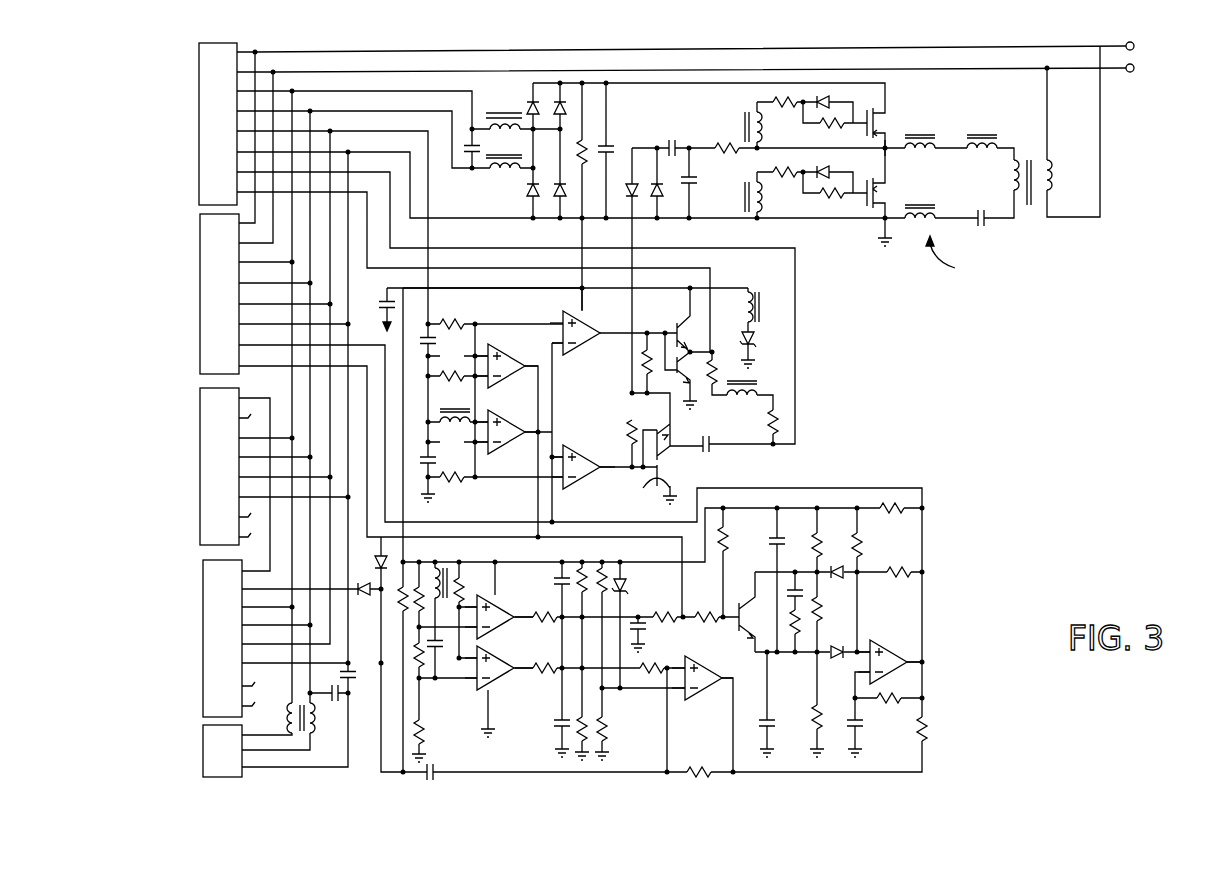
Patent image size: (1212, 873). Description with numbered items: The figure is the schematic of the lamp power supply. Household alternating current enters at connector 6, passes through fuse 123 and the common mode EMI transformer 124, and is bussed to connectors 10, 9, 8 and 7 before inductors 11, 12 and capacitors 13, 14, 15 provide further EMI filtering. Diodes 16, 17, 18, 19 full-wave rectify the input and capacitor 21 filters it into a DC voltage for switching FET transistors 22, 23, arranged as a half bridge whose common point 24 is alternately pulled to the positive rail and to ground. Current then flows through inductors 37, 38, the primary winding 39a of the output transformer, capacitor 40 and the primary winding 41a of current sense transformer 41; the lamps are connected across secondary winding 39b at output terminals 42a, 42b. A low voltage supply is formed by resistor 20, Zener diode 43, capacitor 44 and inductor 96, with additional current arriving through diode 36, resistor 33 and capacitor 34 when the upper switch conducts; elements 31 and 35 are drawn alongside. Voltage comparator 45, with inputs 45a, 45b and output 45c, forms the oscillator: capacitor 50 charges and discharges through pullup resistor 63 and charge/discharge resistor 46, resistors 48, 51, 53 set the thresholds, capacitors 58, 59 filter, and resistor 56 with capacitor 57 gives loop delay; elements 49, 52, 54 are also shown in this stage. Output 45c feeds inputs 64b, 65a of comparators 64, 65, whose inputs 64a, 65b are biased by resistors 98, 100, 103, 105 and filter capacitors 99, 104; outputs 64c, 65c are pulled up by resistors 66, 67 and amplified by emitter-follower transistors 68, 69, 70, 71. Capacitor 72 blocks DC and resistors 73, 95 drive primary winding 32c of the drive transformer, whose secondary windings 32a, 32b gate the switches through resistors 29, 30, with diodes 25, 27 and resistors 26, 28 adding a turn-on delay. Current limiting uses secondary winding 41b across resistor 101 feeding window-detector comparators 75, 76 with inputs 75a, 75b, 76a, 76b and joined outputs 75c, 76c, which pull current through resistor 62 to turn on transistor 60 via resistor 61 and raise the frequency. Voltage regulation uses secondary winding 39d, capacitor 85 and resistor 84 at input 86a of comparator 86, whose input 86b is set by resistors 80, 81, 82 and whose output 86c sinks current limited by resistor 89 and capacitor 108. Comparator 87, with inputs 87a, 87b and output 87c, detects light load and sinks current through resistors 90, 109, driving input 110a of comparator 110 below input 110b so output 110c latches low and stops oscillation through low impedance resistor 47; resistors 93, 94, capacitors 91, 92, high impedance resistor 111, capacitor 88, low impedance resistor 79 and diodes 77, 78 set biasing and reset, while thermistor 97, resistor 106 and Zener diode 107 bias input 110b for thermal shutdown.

The connector 10 is at (199, 62).
The connector 9 is at (200, 255).
The connector 8 is at (200, 436).
The connector 7 is at (203, 623).
The connector 6 is at (203, 748).
The inductor 11 is at (495, 112).
The inductor 12 is at (497, 176).
The capacitor 13 is at (468, 145).
The capacitor 14 is at (336, 702).
The capacitor 15 is at (351, 680).
The diode 16 is at (529, 104).
The diode 17 is at (560, 82).
The diode 18 is at (528, 200).
The diode 19 is at (558, 218).
The resistor 20 is at (580, 145).
The capacitor 21 is at (608, 145).
The switching FET transistor 22 is at (885, 112).
The switching FET transistor 23 is at (880, 190).
The common point 24 is at (888, 152).
The diode 25 is at (833, 97).
The resistor 26 is at (830, 128).
The diode 27 is at (835, 166).
The resistor 28 is at (840, 198).
The resistor 29 is at (783, 116).
The resistor 30 is at (784, 177).
The diode 31 is at (659, 184).
The secondary winding 32a is at (755, 106).
The secondary winding 32b is at (752, 196).
The primary winding 32c is at (748, 399).
The resistor 33 is at (728, 153).
The capacitor 34 is at (673, 139).
The capacitor 35 is at (688, 188).
The diode 36 is at (636, 184).
The inductor 37 is at (935, 142).
The inductor 38 is at (999, 148).
The primary winding 39a is at (1010, 180).
The secondary winding 39b is at (1053, 190).
The secondary winding 39d is at (436, 570).
The capacitor 40 is at (985, 226).
The current sense transformer 41 is at (947, 258).
The primary winding 41a is at (930, 215).
The secondary winding 41b is at (450, 409).
The output terminal 42a is at (1135, 46).
The output terminal 42b is at (1135, 68).
The Zener diode 43 is at (756, 338).
The capacitor 44 is at (378, 306).
The voltage comparator 45 is at (900, 650).
The input pin 45a is at (870, 650).
The input pin 45b is at (905, 672).
The output 45c is at (912, 662).
The charge/discharge resistor 46 is at (893, 700).
The low impedance resistor 47 is at (926, 730).
The resistor 48 is at (897, 575).
The resistor 49 is at (860, 545).
The capacitor 50 is at (860, 745).
The resistor 51 is at (812, 540).
The diode 52 is at (838, 566).
The resistor 53 is at (820, 608).
The diode 54 is at (838, 658).
The resistor 56 is at (795, 652).
The capacitor 57 is at (794, 588).
The capacitor 58 is at (772, 538).
The capacitor 59 is at (770, 718).
The transistor 60 is at (740, 640).
The resistor 61 is at (727, 545).
The resistor 62 is at (705, 614).
The pullup resistor 63 is at (910, 510).
The voltage comparator 64 is at (580, 350).
The input pin 64a is at (562, 321).
The input pin 64b is at (553, 341).
The output 64c is at (583, 318).
The voltage comparator 65 is at (585, 475).
The input pin 65a is at (553, 455).
The input pin 65b is at (562, 480).
The output 65c is at (602, 465).
The pullup resistor 66 is at (645, 345).
The pullup resistor 67 is at (630, 420).
The transistor 68 is at (678, 325).
The transistor 69 is at (677, 370).
The transistor 70 is at (656, 436).
The transistor 71 is at (655, 480).
The capacitor 72 is at (708, 452).
The resistor 73 is at (692, 392).
The voltage comparator 75 is at (505, 360).
The input 75a is at (489, 354).
The input pin 75b is at (489, 378).
The output 75c is at (526, 368).
The voltage comparator 76 is at (527, 432).
The input pin 76a is at (486, 424).
The input 76b is at (489, 444).
The output 76c is at (527, 435).
The diode 77 is at (374, 565).
The diode 78 is at (362, 594).
The low impedance resistor 79 is at (400, 612).
The resistor 80 is at (381, 663).
The resistor 81 is at (417, 665).
The resistor 82 is at (417, 706).
The resistor 84 is at (461, 575).
The capacitor 85 is at (433, 650).
The voltage comparator 86 is at (498, 600).
The input 86a is at (475, 605).
The input 86b is at (478, 629).
The output 86c is at (516, 618).
The voltage comparator 87 is at (502, 690).
The input 87a is at (475, 660).
The input 87b is at (470, 680).
The output 87c is at (516, 670).
The capacitor 88 is at (437, 772).
The resistor 89 is at (548, 614).
The resistor 90 is at (545, 667).
The capacitor 91 is at (560, 575).
The capacitor 92 is at (555, 722).
The resistor 93 is at (582, 566).
The resistor 94 is at (580, 715).
The resistor 95 is at (780, 420).
The inductor 96 is at (745, 300).
The thermistor 97 is at (605, 566).
The resistor 98 is at (449, 323).
The filter capacitor 99 is at (426, 338).
The resistor 100 is at (466, 320).
The resistor 101 is at (441, 375).
The resistor 103 is at (432, 458).
The filter capacitor 104 is at (425, 499).
The resistor 105 is at (452, 481).
The resistor 106 is at (605, 730).
The Zener diode 107 is at (628, 585).
The capacitor 108 is at (642, 640).
The resistor 109 is at (652, 672).
The voltage comparator 110 is at (705, 669).
The input 110a is at (683, 664).
The input 110b is at (686, 690).
The output 110c is at (723, 680).
The high impedance resistor 111 is at (712, 771).
The fuse 123 is at (283, 715).
The transformer 124 is at (312, 735).